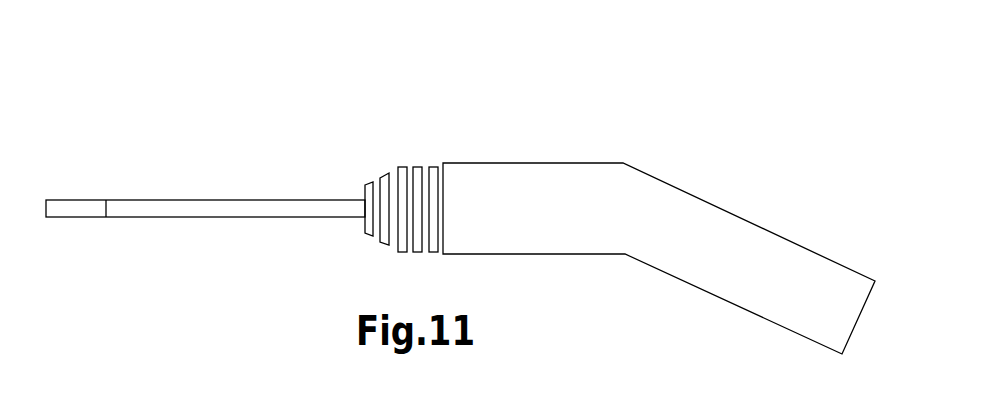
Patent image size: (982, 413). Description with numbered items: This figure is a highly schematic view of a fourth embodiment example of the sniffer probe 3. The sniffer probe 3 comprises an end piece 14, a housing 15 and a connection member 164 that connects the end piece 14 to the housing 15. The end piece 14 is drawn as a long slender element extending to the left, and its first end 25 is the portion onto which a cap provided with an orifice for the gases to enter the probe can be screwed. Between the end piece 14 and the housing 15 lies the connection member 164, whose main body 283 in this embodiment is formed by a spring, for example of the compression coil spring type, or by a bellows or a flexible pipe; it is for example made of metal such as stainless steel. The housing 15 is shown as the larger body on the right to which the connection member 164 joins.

The sniffer probe 3 is at (136, 130).
The end piece 14 is at (257, 195).
The first end 25 is at (85, 212).
The connection member 164 is at (381, 142).
The main body 283 is at (417, 167).
The housing 15 is at (710, 220).